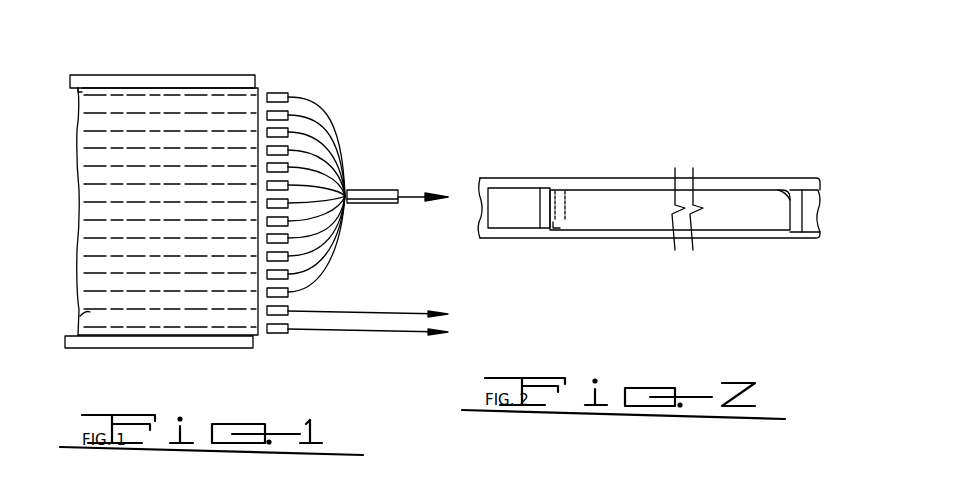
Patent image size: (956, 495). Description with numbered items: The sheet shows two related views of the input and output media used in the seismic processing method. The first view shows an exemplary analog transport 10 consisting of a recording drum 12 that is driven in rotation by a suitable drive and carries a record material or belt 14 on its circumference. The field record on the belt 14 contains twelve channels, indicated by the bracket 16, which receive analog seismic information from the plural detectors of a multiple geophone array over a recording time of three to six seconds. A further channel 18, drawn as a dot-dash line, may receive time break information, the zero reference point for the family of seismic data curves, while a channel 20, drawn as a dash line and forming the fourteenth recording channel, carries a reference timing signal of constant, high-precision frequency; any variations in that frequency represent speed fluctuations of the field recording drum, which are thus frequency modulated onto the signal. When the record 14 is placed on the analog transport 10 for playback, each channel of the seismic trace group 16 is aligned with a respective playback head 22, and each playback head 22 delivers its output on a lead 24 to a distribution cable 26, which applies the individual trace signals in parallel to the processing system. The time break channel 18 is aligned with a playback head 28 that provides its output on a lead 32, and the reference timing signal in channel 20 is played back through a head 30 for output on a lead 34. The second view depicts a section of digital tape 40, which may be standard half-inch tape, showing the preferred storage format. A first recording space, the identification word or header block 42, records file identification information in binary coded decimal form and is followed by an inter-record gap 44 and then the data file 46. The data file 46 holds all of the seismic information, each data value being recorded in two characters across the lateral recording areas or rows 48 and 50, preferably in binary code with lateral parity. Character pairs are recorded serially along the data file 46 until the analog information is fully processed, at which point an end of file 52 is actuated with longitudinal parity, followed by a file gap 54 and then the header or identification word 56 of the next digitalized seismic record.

In FIG. 1, the analog transport 10 is at (205, 40).
In FIG. 1, the recording drum 12 is at (178, 86).
In FIG. 1, the record material or belt 14 is at (118, 86).
In FIG. 1, the channels 16 is at (72, 92).
In FIG. 1, the channel 18 is at (80, 315).
In FIG. 1, the channel 20 is at (122, 338).
In FIG. 1, the playback head 22 is at (283, 135).
In FIG. 1, the lead 24 is at (306, 158).
In FIG. 1, the distribution cable 26 is at (398, 195).
In FIG. 1, the playback head 28 is at (282, 311).
In FIG. 1, the head 30 is at (280, 334).
In FIG. 1, the lead 32 is at (382, 313).
In FIG. 1, the lead 34 is at (383, 334).
In FIG. 2, the digital tape 40 is at (608, 164).
In FIG. 2, the identification word or header block 42 is at (505, 192).
In FIG. 2, the inter-record gap 44 is at (548, 190).
In FIG. 2, the data file 46 is at (622, 192).
In FIG. 2, the column or row 48 is at (556, 230).
In FIG. 2, the column or row 50 is at (563, 228).
In FIG. 2, the end of file 52 is at (782, 190).
In FIG. 2, the file gap 54 is at (796, 230).
In FIG. 2, the header or identification word 56 is at (806, 230).